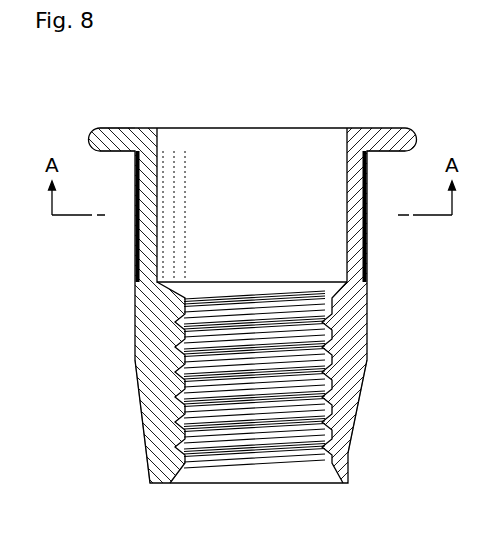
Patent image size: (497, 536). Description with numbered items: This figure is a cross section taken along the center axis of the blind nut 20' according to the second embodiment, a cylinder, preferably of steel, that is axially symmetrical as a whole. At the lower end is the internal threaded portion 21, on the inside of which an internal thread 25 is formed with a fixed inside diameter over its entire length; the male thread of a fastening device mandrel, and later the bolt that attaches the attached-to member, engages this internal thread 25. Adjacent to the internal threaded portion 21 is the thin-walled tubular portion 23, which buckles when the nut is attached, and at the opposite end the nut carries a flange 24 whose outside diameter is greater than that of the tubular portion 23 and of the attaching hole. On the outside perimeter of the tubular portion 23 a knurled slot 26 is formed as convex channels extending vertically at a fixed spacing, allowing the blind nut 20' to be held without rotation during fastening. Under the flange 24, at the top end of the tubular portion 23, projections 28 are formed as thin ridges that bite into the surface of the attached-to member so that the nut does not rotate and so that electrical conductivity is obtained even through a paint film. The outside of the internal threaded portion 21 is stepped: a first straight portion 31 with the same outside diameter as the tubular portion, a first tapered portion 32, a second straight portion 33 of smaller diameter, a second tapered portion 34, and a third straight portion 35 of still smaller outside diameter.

The blind nut 20' is at (251, 268).
The internal threaded portion 21 is at (153, 412).
The tubular portion 23 is at (137, 233).
The flange 24 is at (112, 138).
The internal thread 25 is at (152, 438).
The knurled slot 26 is at (365, 234).
The projections 28 is at (369, 158).
The first straight portion 31 is at (366, 338).
The first tapered portion 32 is at (362, 382).
The second straight portion 33 is at (360, 412).
The second tapered portion 34 is at (354, 443).
The third straight portion 35 is at (349, 468).